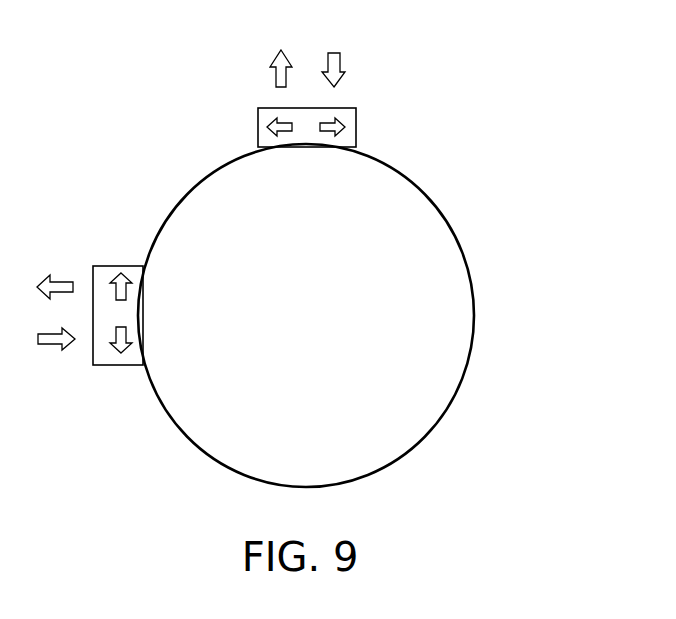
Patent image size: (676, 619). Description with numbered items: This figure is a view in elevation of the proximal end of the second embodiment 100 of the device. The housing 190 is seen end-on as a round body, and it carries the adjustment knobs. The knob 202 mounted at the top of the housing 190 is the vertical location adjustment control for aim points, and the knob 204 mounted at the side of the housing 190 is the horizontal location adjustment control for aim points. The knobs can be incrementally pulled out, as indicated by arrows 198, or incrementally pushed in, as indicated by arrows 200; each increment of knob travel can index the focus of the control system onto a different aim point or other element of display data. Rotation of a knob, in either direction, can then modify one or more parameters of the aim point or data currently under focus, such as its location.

The second embodiment 100 is at (519, 138).
The housing 190 is at (435, 427).
The arrows indicating pull-out 198 is at (340, 60).
The arrows indicating push-in 200 is at (275, 60).
The knob 202 is at (348, 112).
The knob 204 is at (135, 273).